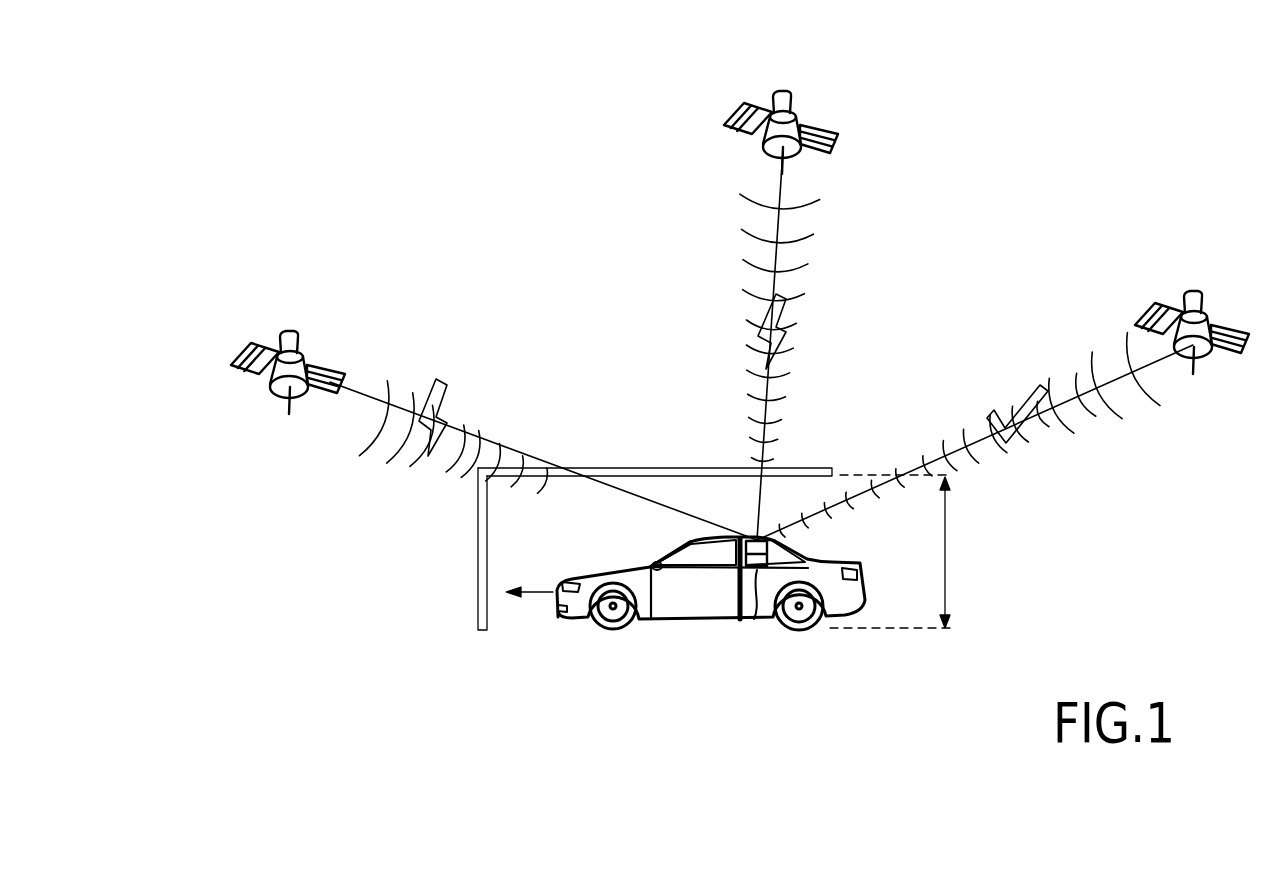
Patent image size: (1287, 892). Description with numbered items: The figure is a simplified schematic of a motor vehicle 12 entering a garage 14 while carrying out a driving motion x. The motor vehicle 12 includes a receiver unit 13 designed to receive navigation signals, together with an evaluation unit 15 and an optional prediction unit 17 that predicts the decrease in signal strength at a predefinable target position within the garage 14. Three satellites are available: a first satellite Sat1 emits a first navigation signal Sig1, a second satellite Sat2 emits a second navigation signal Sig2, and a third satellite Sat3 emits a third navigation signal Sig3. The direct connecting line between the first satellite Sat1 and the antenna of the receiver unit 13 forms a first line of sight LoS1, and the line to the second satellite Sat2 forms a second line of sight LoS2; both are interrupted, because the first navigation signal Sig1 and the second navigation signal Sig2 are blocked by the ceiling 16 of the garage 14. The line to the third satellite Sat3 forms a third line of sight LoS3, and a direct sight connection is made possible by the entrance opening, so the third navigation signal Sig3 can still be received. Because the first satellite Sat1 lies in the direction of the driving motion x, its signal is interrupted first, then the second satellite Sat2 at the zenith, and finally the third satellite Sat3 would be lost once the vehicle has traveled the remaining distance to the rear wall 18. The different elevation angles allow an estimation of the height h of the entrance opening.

The motor vehicle 12 is at (828, 568).
The receiver unit 13 is at (757, 540).
The garage 14 is at (542, 527).
The evaluation unit 15 is at (753, 622).
The ceiling 16 is at (645, 468).
The prediction unit 17 is at (668, 558).
The rear wall 18 is at (488, 625).
The first satellite Sat1 is at (297, 355).
The second satellite Sat2 is at (785, 113).
The third satellite Sat3 is at (1202, 310).
The first navigation signal Sig1 is at (353, 428).
The second navigation signal Sig2 is at (803, 230).
The third navigation signal Sig3 is at (1127, 400).
The first line of sight LoS1 is at (490, 440).
The second line of sight LoS2 is at (780, 275).
The third line of sight LoS3 is at (960, 447).
The driving motion x is at (538, 590).
The height h is at (937, 552).